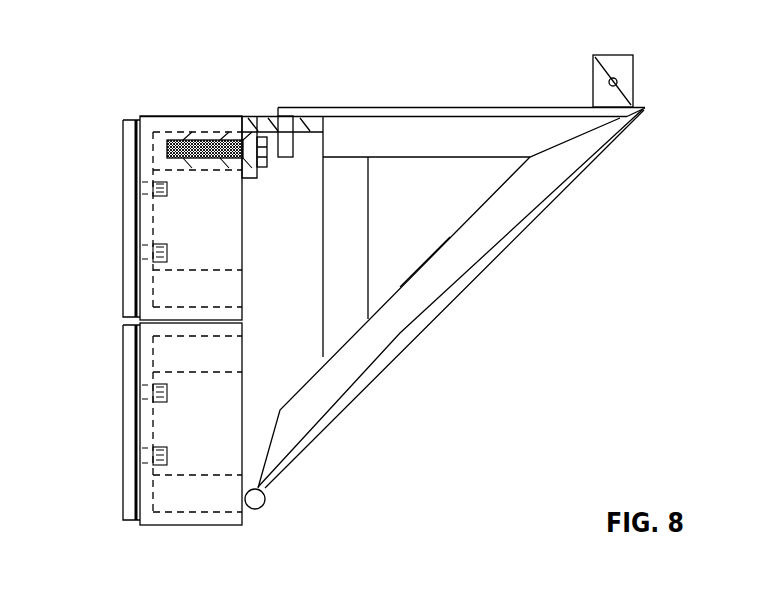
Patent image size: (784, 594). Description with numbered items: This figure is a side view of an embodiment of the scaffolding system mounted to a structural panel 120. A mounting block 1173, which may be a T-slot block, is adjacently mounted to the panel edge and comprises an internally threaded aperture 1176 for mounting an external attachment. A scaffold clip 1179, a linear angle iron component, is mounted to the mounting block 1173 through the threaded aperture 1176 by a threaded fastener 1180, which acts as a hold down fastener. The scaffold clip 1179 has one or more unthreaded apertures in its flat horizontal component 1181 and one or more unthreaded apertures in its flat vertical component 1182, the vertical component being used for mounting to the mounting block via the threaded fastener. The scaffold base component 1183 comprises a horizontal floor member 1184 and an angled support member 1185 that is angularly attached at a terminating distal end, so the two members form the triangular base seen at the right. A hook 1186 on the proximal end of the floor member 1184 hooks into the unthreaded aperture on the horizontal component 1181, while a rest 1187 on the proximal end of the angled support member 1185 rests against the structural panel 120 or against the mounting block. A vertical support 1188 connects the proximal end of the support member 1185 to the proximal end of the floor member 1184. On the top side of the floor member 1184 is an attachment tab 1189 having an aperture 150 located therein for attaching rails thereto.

The structural panel 120 is at (158, 418).
The aperture 150 is at (617, 80).
The mounting block 1173 is at (172, 128).
The internally threaded aperture 1176 is at (235, 159).
The scaffold clip 1179 is at (321, 126).
The threaded fastener 1180 is at (166, 148).
The flat horizontal component 1181 is at (258, 114).
The flat vertical component 1182 is at (262, 172).
The scaffold base component 1183 is at (468, 425).
The horizontal floor member 1184 is at (505, 108).
The angled support member 1185 is at (406, 358).
The hook 1186 is at (325, 158).
The rest 1187 is at (262, 513).
The vertical support 1188 is at (405, 280).
The attachment tab 1189 is at (634, 90).